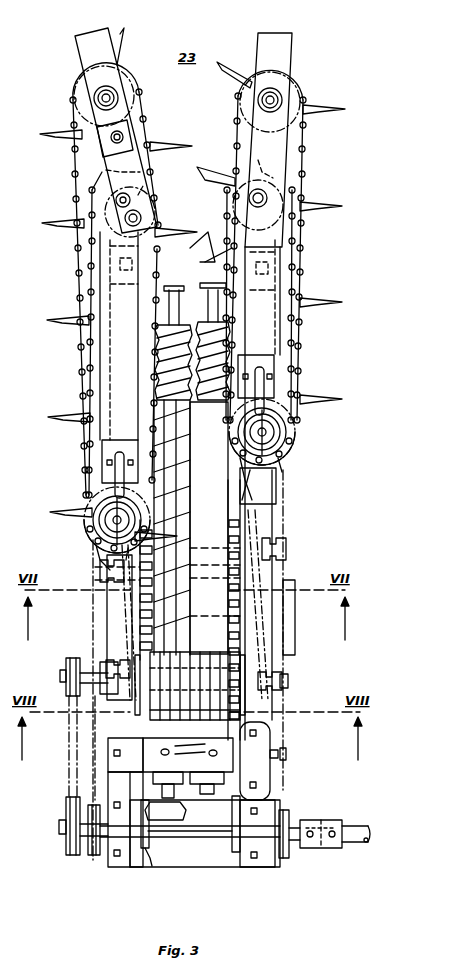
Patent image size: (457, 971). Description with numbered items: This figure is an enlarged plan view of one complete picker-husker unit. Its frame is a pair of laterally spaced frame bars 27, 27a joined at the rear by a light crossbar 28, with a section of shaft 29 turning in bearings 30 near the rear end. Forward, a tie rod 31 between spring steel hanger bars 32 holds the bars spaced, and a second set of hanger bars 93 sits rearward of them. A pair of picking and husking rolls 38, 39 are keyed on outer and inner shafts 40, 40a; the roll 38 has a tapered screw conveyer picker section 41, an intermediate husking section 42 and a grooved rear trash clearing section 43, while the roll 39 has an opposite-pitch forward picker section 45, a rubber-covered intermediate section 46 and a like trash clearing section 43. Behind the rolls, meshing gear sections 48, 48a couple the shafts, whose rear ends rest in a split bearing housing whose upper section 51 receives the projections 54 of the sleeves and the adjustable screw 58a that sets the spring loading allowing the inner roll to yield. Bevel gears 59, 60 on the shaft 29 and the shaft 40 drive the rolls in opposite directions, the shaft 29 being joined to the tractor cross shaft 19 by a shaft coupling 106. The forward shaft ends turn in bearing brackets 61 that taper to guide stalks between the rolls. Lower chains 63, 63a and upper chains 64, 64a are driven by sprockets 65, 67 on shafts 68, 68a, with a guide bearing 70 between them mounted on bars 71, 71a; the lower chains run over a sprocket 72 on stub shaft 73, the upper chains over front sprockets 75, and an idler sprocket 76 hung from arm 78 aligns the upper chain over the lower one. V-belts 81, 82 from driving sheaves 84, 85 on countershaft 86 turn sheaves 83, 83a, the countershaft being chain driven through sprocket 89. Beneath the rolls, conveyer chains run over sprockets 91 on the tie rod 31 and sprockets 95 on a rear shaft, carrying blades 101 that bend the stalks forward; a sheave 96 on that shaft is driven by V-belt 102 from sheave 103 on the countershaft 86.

The bar 71 is at (99, 33).
The bar 71a is at (290, 53).
The sprocket 75 is at (76, 112).
The arm 78 is at (110, 163).
The sprocket 72 is at (149, 176).
The idler sprocket 76 is at (157, 205).
The stub shaft 73 is at (199, 205).
The upper conveying chain 64 is at (74, 184).
The upper conveying chain 64a is at (305, 143).
The lower stalk conveying chain 63 is at (78, 280).
The lower stalk conveying chain 63a is at (300, 260).
The bearing bracket 61 is at (192, 250).
The outer rotatable shaft 40 is at (169, 310).
The inner rotatable shaft 40a is at (208, 312).
The screw conveyer picker section 41 is at (156, 360).
The forward screw conveyer picker section 45 is at (222, 352).
The guide bearing 70 is at (124, 447).
The sprocket 67 is at (238, 420).
The sprocket 65 is at (95, 480).
The shaft 68 is at (107, 518).
The shaft 68a is at (267, 432).
The V-groove sheave 83 is at (93, 534).
The V-groove sheave 83a is at (283, 457).
The picking and husking roll 38 is at (185, 481).
The picking and husking roll 39 is at (209, 528).
The blades 101 is at (229, 522).
The tie rod 31 is at (235, 548).
The intermediate screw conveyer husking section 42 is at (186, 600).
The intermediate section 46 is at (258, 486).
The rear trash clearing section 43 is at (215, 652).
The frame bar 27 is at (105, 592).
The frame bar 27a is at (279, 527).
The V-belt 81 is at (97, 617).
The sprockets 91 is at (191, 605).
The hanger bars 32 is at (100, 567).
The V-belt 82 is at (290, 605).
The hanger bars 93 is at (108, 660).
The sprockets 95 is at (135, 716).
The driving sheave 96 is at (66, 660).
The V-belt 102 is at (70, 746).
The sheave 103 is at (66, 850).
The driving sheave 84 is at (92, 856).
The driving sheave 85 is at (288, 855).
The shaft coupling 106 is at (322, 820).
The cross shaft 19 is at (360, 825).
The upper section of bearing bracket 51 is at (136, 762).
The gear section 48 is at (188, 754).
The peripheral projections 54 is at (192, 756).
The gear section 48a is at (251, 761).
The adjustable screw 58a is at (287, 755).
The crossbar 28 is at (185, 867).
The bearings 30 is at (110, 856).
The beveled gear 60 is at (188, 810).
The shaft 29 is at (210, 837).
The countershaft 86 is at (163, 833).
The beveled gear 59 is at (152, 858).
The sprocket 89 is at (237, 862).